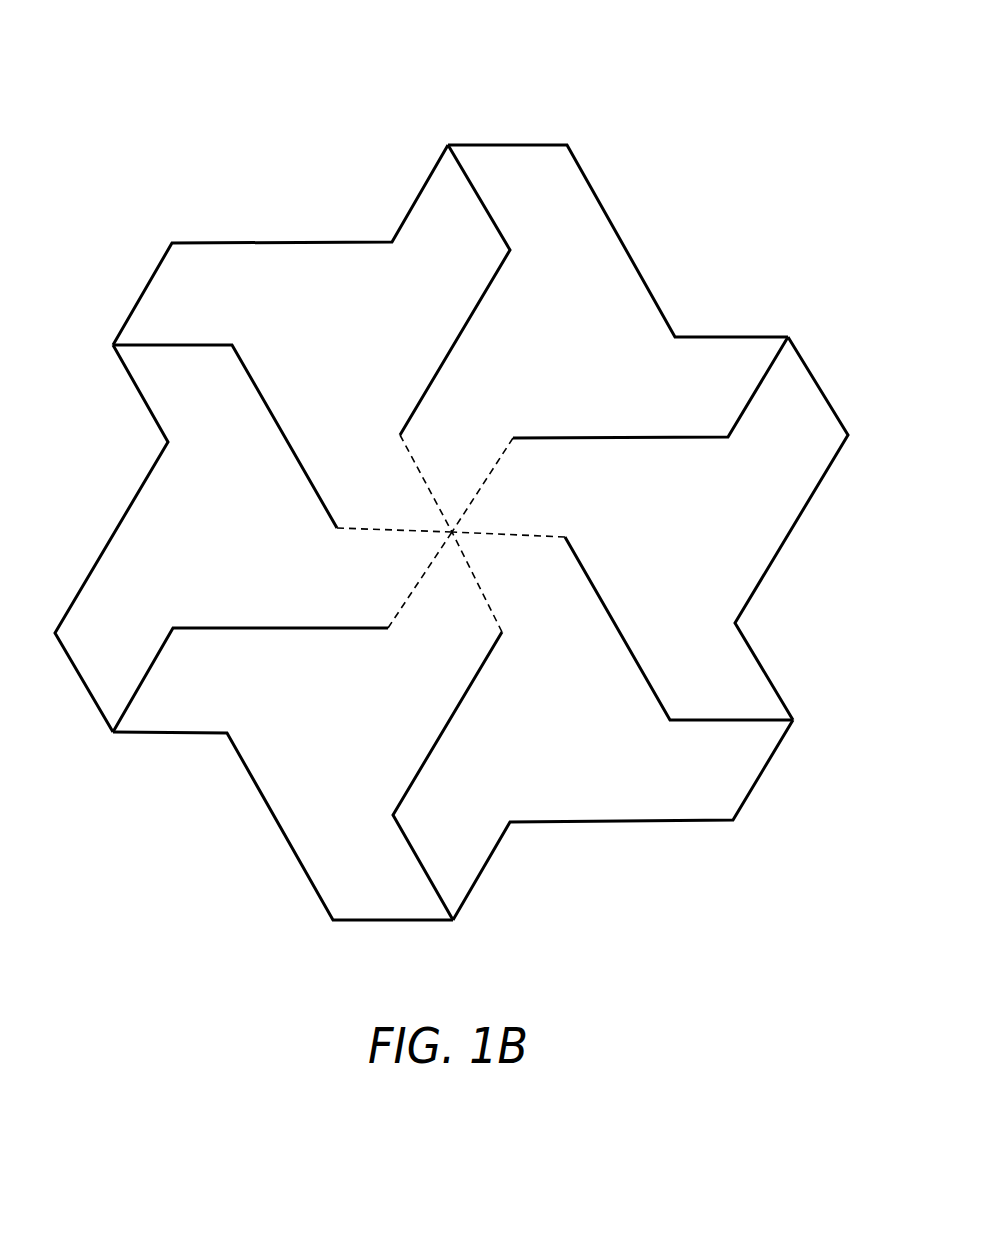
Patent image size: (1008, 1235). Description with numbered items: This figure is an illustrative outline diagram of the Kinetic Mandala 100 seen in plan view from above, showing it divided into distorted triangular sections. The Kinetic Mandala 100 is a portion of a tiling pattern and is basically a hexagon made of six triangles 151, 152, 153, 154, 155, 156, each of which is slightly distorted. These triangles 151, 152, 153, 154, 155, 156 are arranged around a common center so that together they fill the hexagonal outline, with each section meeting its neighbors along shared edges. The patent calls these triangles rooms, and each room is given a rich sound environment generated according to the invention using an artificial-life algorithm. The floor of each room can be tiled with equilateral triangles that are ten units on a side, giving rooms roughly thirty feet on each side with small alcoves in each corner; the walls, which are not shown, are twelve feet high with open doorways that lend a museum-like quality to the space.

The Kinetic Mandala 100 is at (543, 72).
The triangle 151 is at (580, 370).
The triangle 152 is at (696, 549).
The triangle 153 is at (579, 736).
The triangle 154 is at (361, 736).
The triangle 155 is at (248, 549).
The triangle 156 is at (364, 370).